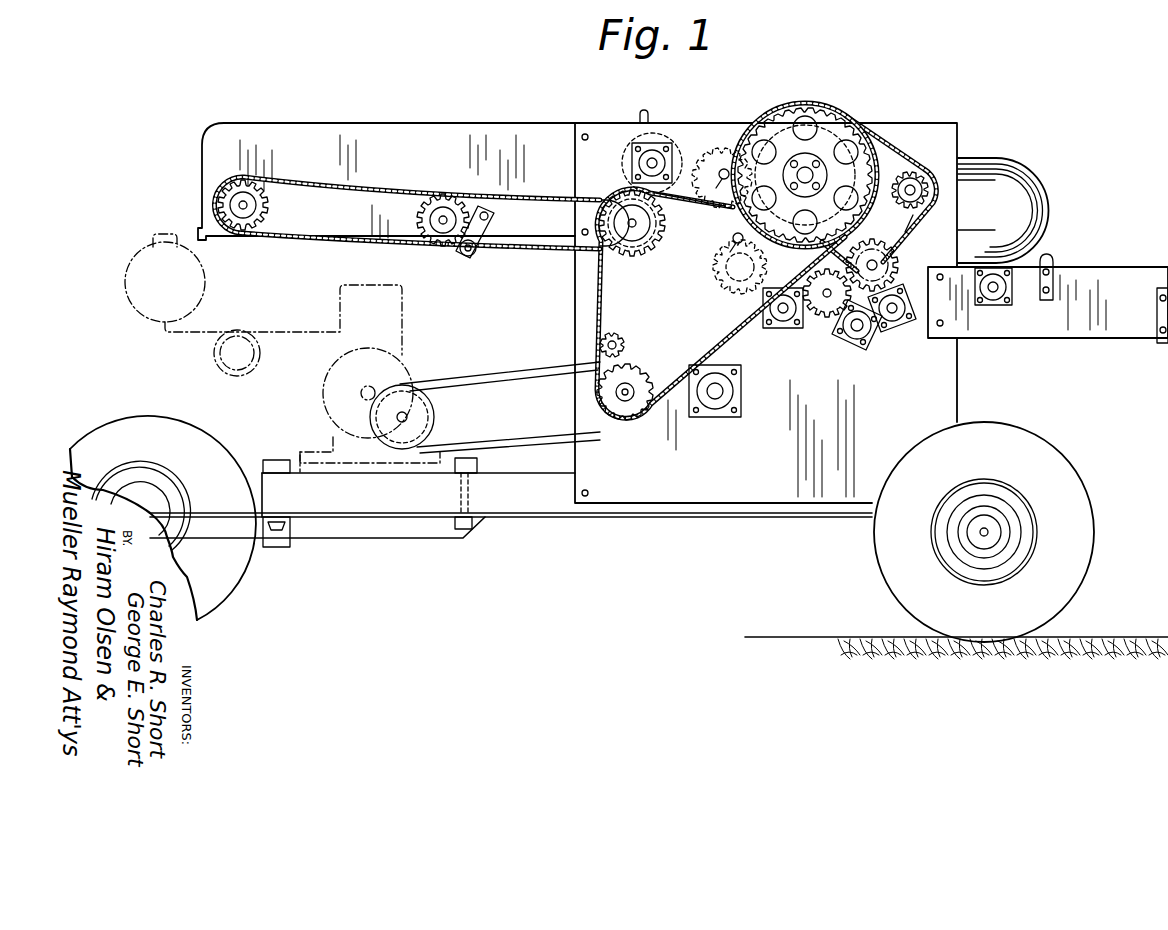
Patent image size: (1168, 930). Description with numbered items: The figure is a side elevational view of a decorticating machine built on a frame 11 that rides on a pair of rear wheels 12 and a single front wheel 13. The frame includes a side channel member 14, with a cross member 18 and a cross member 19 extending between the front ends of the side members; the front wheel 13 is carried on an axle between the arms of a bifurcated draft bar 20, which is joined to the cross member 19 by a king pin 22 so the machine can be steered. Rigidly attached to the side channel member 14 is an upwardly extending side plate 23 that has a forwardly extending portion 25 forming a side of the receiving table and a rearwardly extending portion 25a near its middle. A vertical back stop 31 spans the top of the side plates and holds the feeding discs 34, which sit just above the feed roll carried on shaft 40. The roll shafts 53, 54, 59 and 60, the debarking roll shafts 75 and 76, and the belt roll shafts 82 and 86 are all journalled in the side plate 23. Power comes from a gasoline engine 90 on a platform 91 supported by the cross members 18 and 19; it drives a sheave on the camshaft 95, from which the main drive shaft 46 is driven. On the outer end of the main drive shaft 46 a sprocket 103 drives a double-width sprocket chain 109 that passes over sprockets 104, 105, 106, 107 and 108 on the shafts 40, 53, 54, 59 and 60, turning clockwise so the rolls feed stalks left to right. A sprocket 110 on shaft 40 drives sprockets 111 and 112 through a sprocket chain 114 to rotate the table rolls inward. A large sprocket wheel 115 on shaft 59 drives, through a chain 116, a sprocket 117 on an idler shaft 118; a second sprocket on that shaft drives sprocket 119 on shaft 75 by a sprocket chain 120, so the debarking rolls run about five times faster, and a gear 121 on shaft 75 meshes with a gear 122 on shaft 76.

The frame 11 is at (512, 530).
The rear wheels 12 is at (1080, 534).
The front wheel 13 is at (167, 423).
The side channel member 14 is at (543, 507).
The cross member 18 is at (270, 465).
The cross member 19 is at (477, 466).
The bifurcated draft bar 20 is at (377, 538).
The king pin 22 is at (467, 457).
The side plate 23 is at (943, 366).
The forwardly extending portion 25 is at (408, 135).
The rearwardly extending portion 25a is at (1117, 267).
The back stop 31 is at (645, 111).
The feeding discs 34 is at (668, 140).
The shaft 40 is at (602, 217).
The main drive shaft 46 is at (604, 419).
The shaft 53 is at (726, 168).
The shaft 54 is at (736, 243).
The shaft 59 is at (805, 175).
The shaft 60 is at (762, 256).
The shaft 75 is at (906, 240).
The shaft 76 is at (824, 296).
The shaft 82 is at (1157, 312).
The shaft 86 is at (993, 290).
The gasoline engine 90 is at (412, 367).
The platform 91 is at (303, 462).
The camshaft 95 is at (697, 418).
The sprocket 103 is at (628, 405).
The sprocket 104 is at (622, 250).
The sprocket 105 is at (706, 152).
The sprocket 106 is at (716, 253).
The sprocket 107 is at (837, 110).
The sprocket 108 is at (795, 255).
The sprocket chain 109 is at (727, 347).
The sprocket 110 is at (620, 193).
The sprocket 111 is at (243, 217).
The sprocket 112 is at (440, 232).
The sprocket chain 114 is at (527, 249).
The large sprocket wheel 115 is at (867, 113).
The chain 116 is at (910, 168).
The sprocket 117 is at (915, 184).
The idler shaft 118 is at (918, 195).
The sprocket 119 is at (902, 255).
The sprocket chain 120 is at (926, 208).
The gear 121 is at (886, 282).
The gear 122 is at (828, 316).